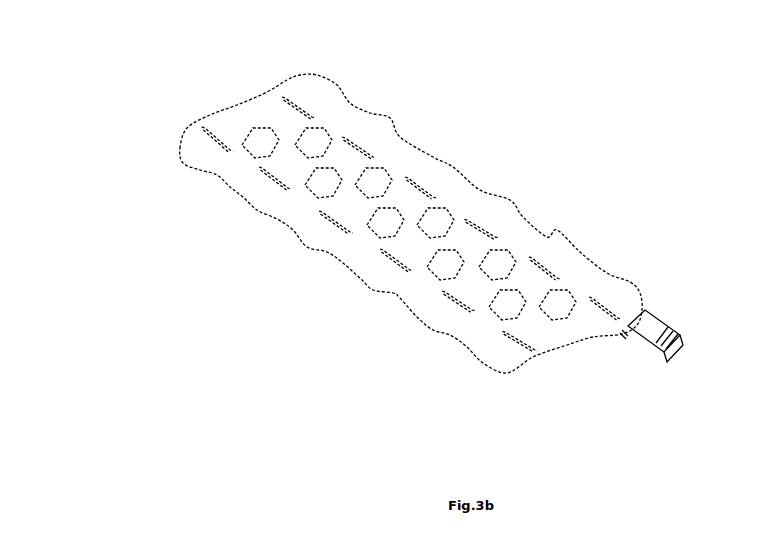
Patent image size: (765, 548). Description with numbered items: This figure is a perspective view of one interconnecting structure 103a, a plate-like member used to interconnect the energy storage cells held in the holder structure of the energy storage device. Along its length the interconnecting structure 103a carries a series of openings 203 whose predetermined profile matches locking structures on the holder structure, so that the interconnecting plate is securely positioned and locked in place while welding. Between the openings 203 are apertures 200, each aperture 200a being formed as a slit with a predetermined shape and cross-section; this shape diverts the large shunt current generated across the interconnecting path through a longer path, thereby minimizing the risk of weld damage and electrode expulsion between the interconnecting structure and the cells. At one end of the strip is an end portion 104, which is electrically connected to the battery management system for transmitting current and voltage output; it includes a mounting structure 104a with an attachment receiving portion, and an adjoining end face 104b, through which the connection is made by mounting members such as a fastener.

The interconnecting structure 103a is at (100, 52).
The apertures 200 is at (372, 142).
The aperture 200a is at (428, 184).
The openings 203 is at (506, 253).
The end portion 104 is at (658, 341).
The mounting structure 104a is at (664, 358).
The connector end face 104b is at (684, 341).